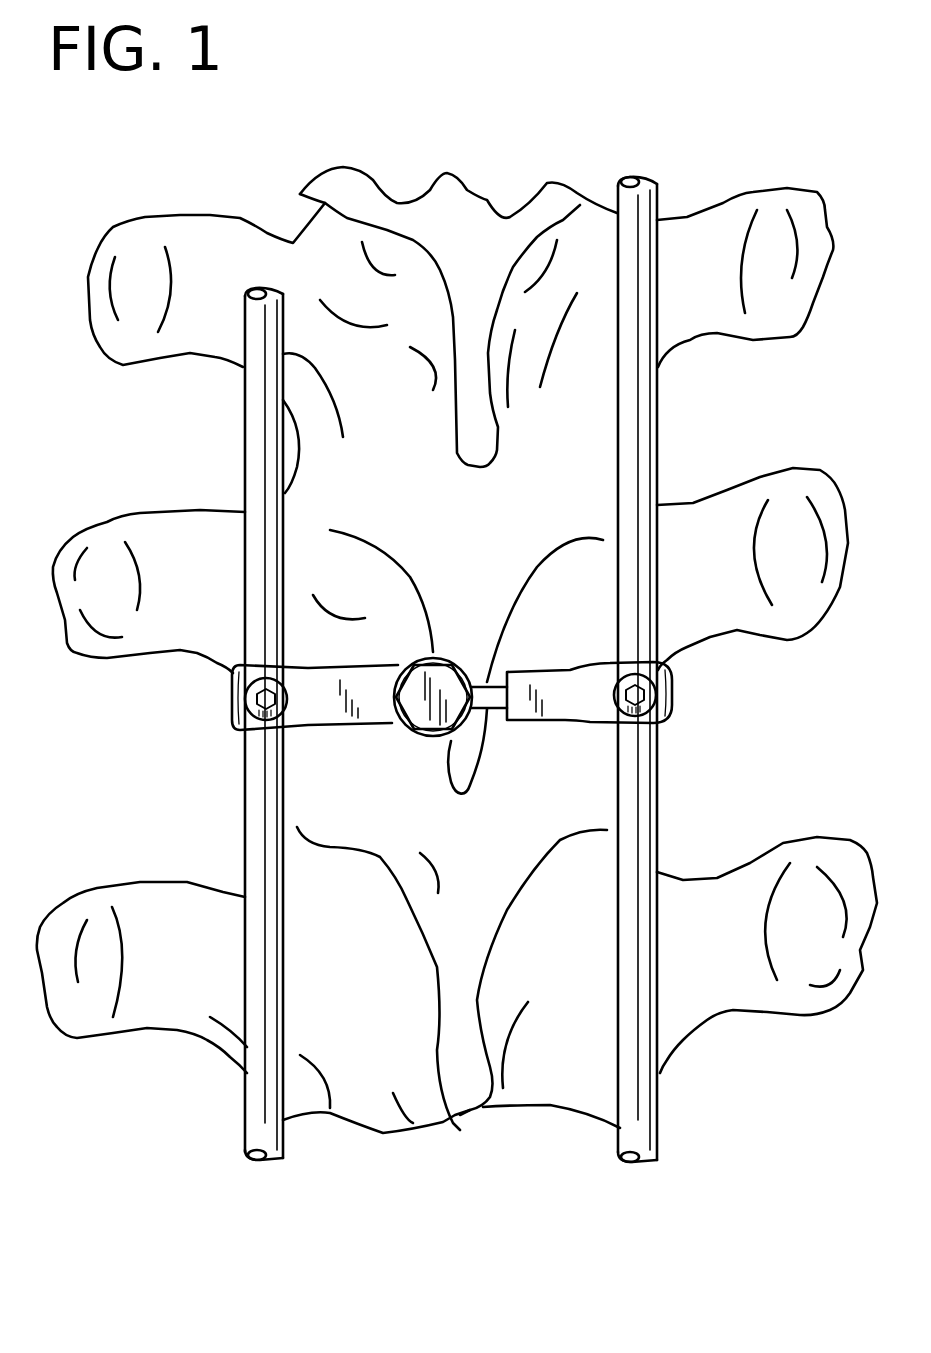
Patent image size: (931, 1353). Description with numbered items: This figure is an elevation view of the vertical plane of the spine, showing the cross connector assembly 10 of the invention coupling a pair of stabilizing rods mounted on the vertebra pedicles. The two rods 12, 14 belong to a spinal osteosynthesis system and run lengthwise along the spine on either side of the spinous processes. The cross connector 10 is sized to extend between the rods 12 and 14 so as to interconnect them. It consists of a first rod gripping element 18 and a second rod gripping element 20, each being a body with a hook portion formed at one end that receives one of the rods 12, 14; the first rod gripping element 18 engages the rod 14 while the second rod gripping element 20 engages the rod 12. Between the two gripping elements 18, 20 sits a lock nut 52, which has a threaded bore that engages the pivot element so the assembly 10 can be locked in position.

The cross connector assembly 10 is at (463, 583).
The rod 12 is at (260, 1131).
The rod 14 is at (645, 1133).
The first rod gripping element 18 is at (597, 712).
The second rod gripping element 20 is at (287, 718).
The lock nut 52 is at (407, 718).